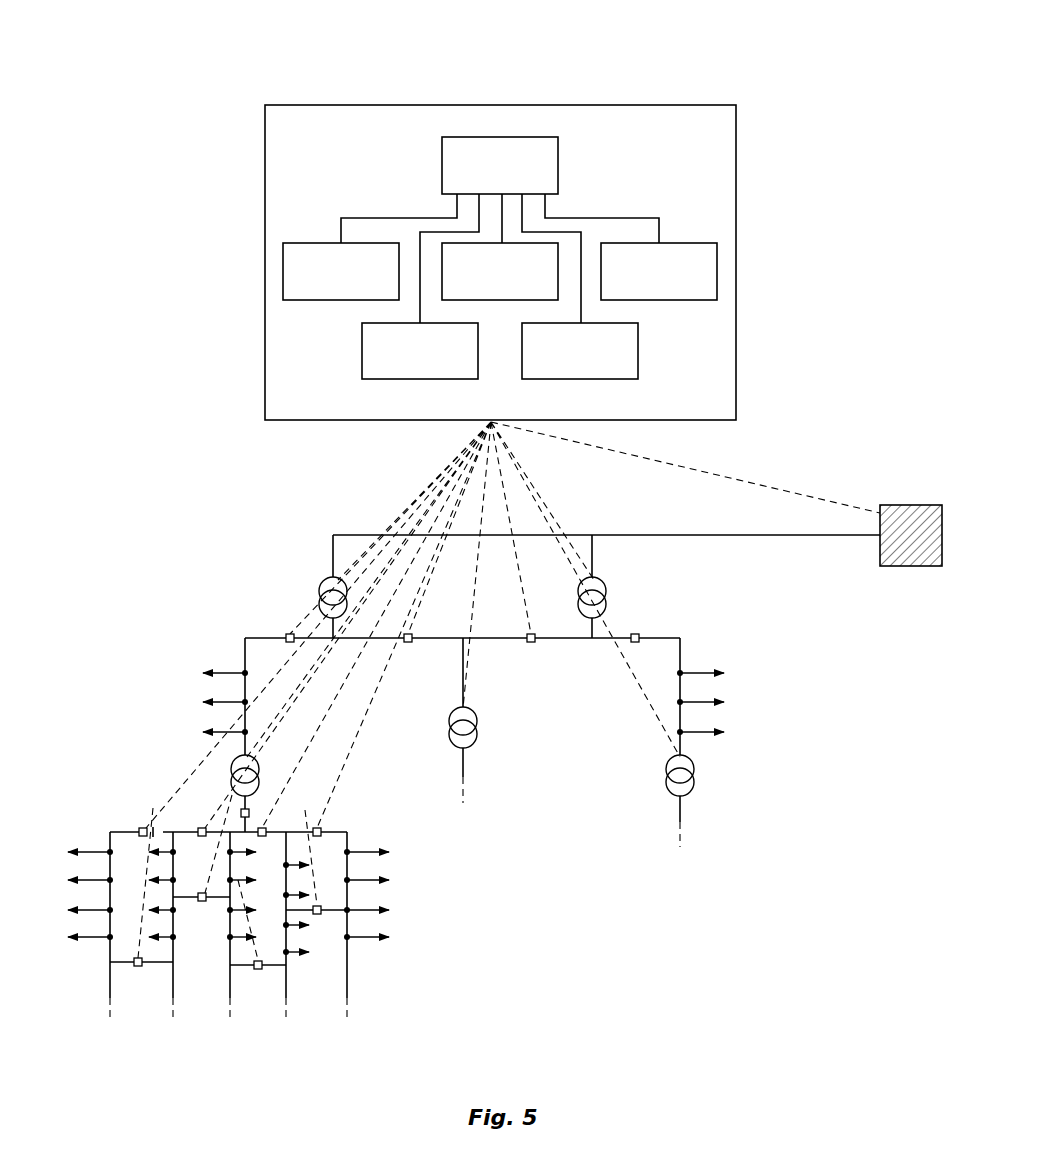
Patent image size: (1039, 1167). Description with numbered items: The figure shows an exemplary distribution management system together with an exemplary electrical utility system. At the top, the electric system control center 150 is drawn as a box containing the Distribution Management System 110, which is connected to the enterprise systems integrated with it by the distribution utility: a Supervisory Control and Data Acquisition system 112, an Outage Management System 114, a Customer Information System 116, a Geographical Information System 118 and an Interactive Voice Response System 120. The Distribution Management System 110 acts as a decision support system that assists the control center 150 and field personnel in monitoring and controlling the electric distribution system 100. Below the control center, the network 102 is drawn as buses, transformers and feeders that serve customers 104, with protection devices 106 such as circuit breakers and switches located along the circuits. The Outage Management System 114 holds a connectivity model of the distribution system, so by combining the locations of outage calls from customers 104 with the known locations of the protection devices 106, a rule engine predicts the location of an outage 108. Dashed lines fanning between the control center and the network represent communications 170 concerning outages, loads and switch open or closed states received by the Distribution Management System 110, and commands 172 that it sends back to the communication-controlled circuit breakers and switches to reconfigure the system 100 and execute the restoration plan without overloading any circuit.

The electric distribution system 100 is at (100, 41).
The network 102 is at (176, 557).
The customers 104 is at (205, 702).
The protection devices 106 is at (409, 633).
The outage location 108 is at (150, 829).
The Distribution Management System 110 is at (441, 163).
The Supervisory Control and Data Acquisition system 112 is at (305, 243).
The Outage Management System 114 is at (361, 350).
The Customer Information System 116 is at (460, 300).
The Geographical Information System 118 is at (638, 350).
The Interactive Voice Response System 120 is at (690, 243).
The electric system control center 150 is at (264, 212).
The communications 170 is at (509, 691).
The commands 172 is at (407, 508).